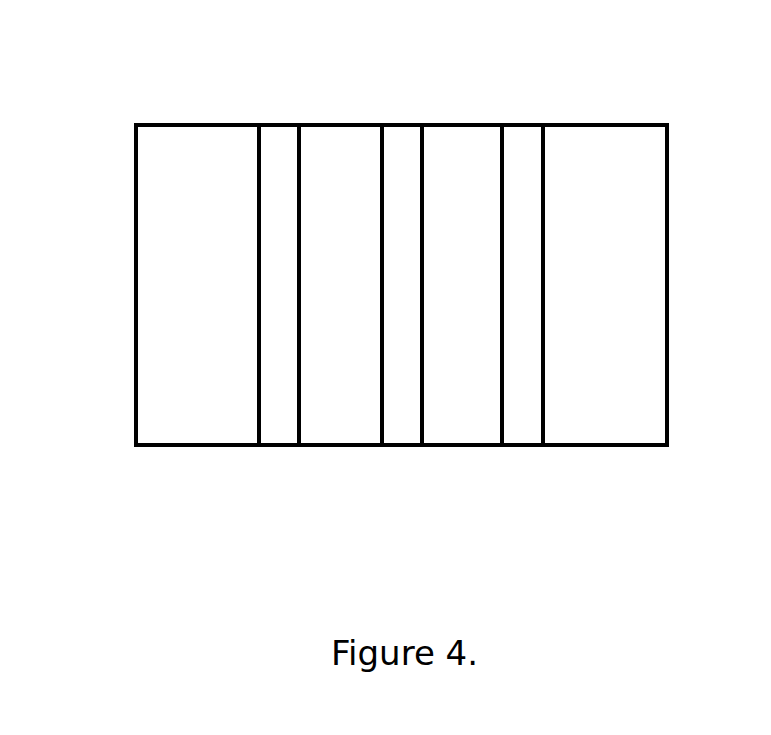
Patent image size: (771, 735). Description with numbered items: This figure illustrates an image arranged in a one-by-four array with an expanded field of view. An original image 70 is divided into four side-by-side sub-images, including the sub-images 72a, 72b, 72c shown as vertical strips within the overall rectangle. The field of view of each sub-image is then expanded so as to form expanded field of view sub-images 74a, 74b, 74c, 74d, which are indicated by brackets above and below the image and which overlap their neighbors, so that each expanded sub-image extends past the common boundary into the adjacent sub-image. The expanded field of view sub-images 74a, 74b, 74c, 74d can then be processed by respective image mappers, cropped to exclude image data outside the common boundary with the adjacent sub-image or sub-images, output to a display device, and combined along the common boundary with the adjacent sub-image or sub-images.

The original image 70 is at (95, 472).
The sub-image 72a is at (197, 124).
The sub-image 72b is at (340, 447).
The sub-image 72c is at (461, 124).
The expanded field of view sub-image 74a is at (300, 452).
The expanded field of view sub-image 74b is at (422, 118).
The expanded field of view sub-image 74c is at (542, 452).
The expanded field of view sub-image 74d is at (667, 118).